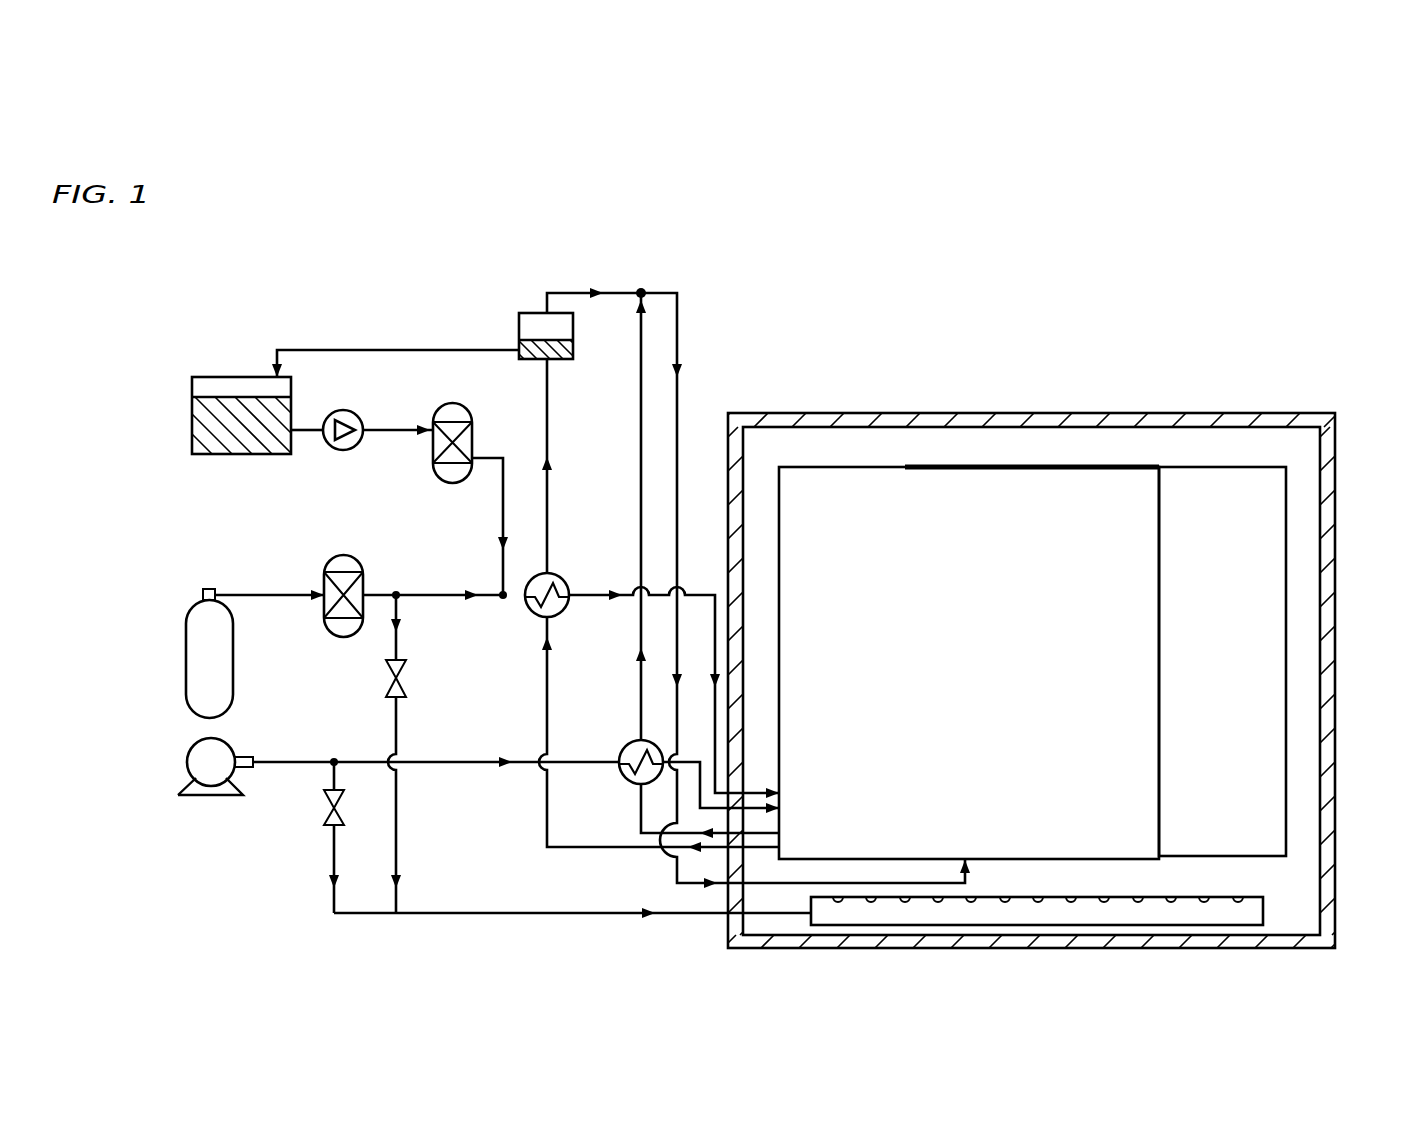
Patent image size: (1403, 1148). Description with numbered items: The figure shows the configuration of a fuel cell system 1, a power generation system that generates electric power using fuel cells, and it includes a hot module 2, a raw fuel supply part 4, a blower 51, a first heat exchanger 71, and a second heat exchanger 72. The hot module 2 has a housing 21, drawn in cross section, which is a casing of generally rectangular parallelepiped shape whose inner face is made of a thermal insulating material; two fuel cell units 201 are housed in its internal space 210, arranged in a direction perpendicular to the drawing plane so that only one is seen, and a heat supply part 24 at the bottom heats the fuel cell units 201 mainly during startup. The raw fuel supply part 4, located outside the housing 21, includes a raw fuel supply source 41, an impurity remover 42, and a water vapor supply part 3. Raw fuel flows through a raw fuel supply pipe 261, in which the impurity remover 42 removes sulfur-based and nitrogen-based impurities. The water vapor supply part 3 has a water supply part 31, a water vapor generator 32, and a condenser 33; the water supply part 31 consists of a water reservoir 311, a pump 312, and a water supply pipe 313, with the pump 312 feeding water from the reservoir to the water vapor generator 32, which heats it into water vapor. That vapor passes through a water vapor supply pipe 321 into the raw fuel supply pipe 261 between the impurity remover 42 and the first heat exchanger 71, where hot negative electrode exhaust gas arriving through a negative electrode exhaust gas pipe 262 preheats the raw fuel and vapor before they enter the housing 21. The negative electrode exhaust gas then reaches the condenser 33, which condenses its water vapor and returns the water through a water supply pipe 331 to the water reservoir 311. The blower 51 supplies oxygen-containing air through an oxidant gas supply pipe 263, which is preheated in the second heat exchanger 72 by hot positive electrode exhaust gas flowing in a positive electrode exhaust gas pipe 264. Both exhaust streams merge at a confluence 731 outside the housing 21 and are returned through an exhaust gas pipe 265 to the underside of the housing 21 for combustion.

The fuel cell system 1 is at (209, 243).
The hot module 2 is at (1315, 347).
The housing 21 is at (1336, 455).
The fuel cell unit 201 is at (905, 465).
The internal space 210 is at (1215, 465).
The heat supply part 24 is at (1260, 912).
The water vapor supply part 3 is at (396, 304).
The water supply part 31 is at (256, 370).
The water reservoir 311 is at (233, 456).
The pump 312 is at (343, 411).
The water supply pipe 313 is at (396, 428).
The water vapor generator 32 is at (431, 453).
The water vapor supply pipe 321 is at (501, 520).
The condenser 33 is at (518, 327).
The water supply pipe 331 is at (480, 349).
The raw fuel supply part 4 is at (255, 570).
The raw fuel supply source 41 is at (235, 643).
The impurity remover 42 is at (343, 555).
The blower 51 is at (217, 797).
The first heat exchanger 71 is at (561, 617).
The second heat exchanger 72 is at (624, 749).
The confluence 731 is at (637, 299).
The raw fuel supply pipe 261 is at (586, 586).
The negative electrode exhaust gas pipe 262 is at (545, 832).
The oxidant gas supply pipe 263 is at (482, 760).
The positive electrode exhaust gas pipe 264 is at (639, 815).
The exhaust gas pipe 265 is at (683, 346).